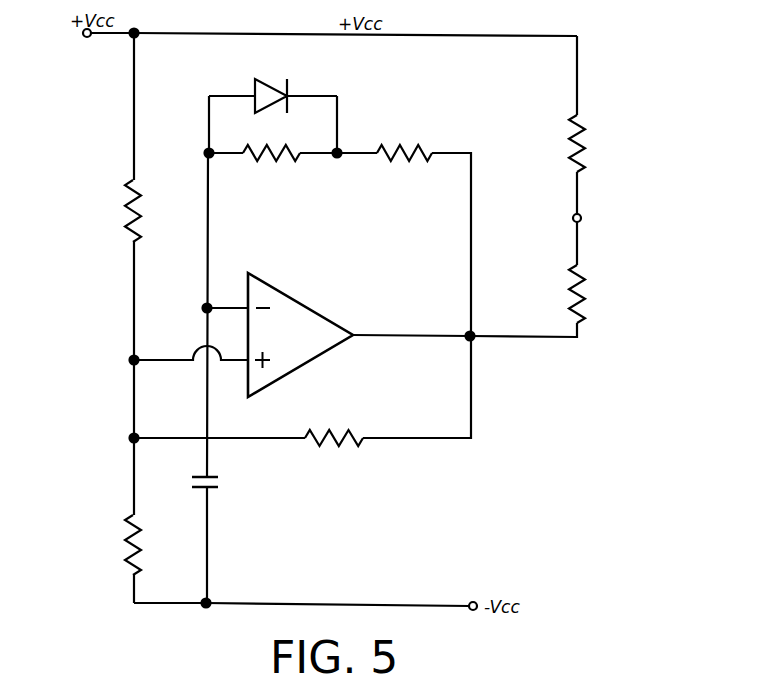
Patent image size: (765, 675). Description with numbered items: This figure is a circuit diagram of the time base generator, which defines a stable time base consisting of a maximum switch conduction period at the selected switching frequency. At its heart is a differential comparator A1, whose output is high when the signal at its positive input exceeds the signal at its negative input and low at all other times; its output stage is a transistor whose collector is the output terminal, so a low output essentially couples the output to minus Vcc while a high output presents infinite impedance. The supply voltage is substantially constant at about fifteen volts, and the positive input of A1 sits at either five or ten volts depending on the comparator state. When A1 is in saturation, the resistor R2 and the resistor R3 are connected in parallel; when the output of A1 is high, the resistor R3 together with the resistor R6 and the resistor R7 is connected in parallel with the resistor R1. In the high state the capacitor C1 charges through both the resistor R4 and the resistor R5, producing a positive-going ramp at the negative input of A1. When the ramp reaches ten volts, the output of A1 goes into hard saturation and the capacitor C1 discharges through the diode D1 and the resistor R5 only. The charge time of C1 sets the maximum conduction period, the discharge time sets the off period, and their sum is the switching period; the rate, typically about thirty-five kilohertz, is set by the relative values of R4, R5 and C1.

The resistor R1 is at (112, 211).
The resistor R2 is at (113, 545).
The resistor R3 is at (334, 453).
The resistor R4 is at (254, 171).
The resistor R5 is at (404, 170).
The resistor R6 is at (593, 143).
The resistor R7 is at (592, 294).
The diode D1 is at (273, 82).
The capacitor C1 is at (221, 484).
The differential comparator A1 is at (304, 305).